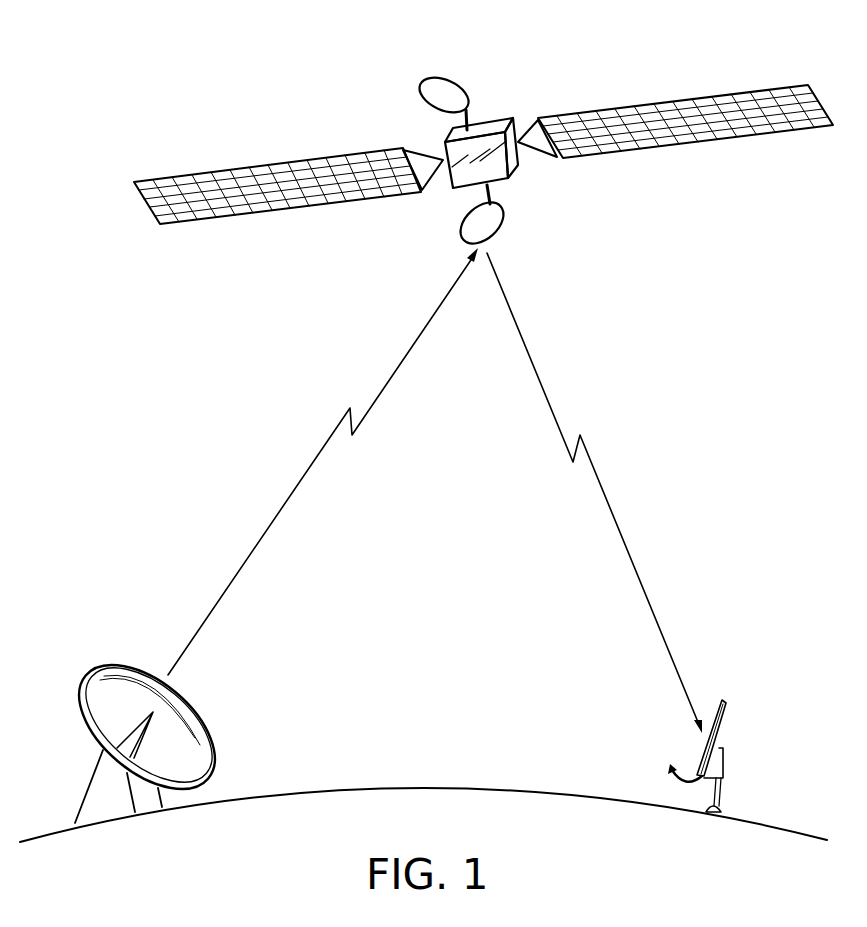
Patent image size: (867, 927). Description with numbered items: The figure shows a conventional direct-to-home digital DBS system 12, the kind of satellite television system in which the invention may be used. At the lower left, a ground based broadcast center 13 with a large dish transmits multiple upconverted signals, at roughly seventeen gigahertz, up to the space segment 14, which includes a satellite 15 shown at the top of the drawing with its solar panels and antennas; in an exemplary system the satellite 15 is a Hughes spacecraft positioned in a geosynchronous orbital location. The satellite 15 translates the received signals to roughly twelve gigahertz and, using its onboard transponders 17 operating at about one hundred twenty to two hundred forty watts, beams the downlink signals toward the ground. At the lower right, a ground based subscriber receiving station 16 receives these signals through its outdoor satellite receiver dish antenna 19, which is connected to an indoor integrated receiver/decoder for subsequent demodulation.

The digital DBS system 12 is at (158, 58).
The ground based broadcast center 13 is at (98, 765).
The space segment 14 is at (477, 66).
The satellite 15 is at (500, 117).
The ground based subscriber receiving station 16 is at (739, 679).
The onboard transponders 17 is at (503, 213).
The satellite receiver dish antenna 19 is at (725, 720).